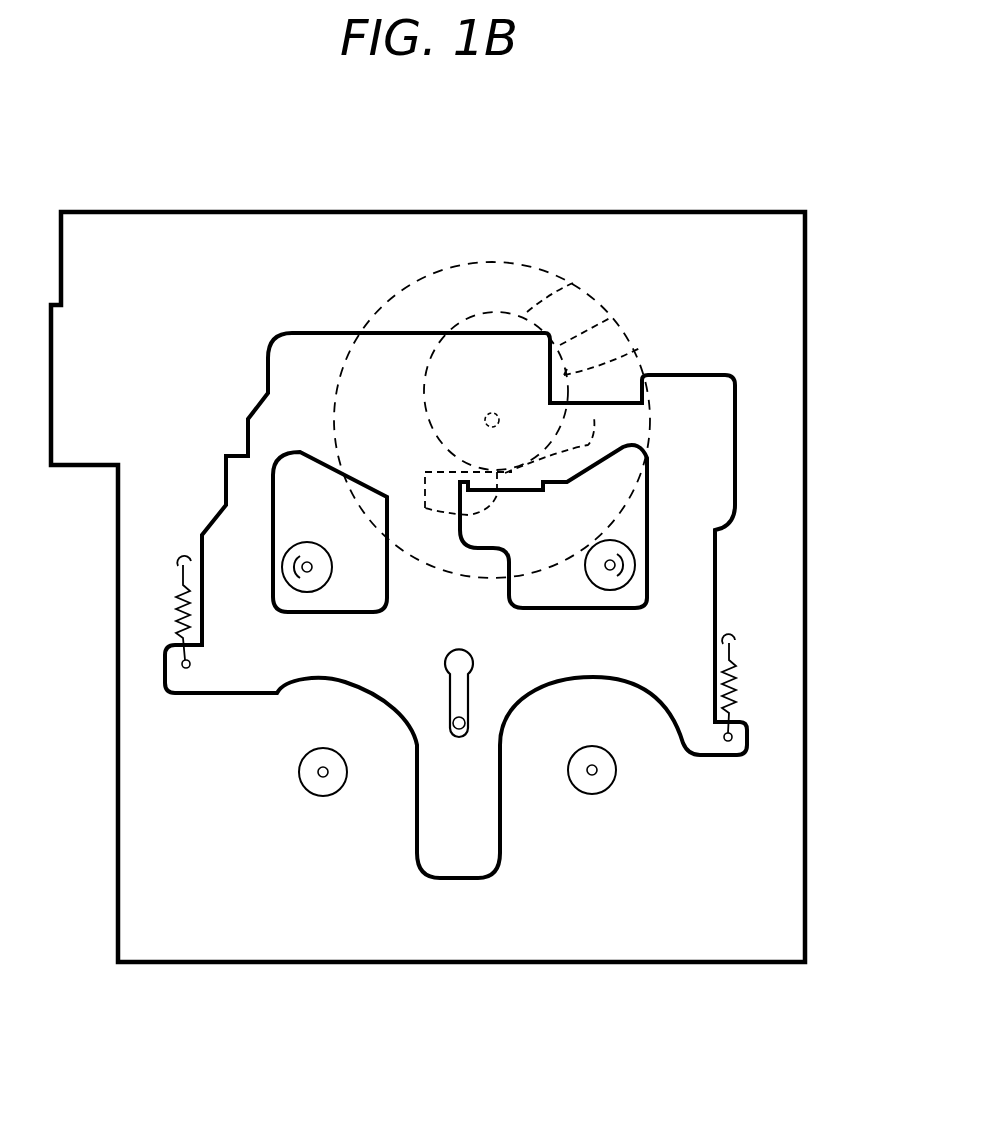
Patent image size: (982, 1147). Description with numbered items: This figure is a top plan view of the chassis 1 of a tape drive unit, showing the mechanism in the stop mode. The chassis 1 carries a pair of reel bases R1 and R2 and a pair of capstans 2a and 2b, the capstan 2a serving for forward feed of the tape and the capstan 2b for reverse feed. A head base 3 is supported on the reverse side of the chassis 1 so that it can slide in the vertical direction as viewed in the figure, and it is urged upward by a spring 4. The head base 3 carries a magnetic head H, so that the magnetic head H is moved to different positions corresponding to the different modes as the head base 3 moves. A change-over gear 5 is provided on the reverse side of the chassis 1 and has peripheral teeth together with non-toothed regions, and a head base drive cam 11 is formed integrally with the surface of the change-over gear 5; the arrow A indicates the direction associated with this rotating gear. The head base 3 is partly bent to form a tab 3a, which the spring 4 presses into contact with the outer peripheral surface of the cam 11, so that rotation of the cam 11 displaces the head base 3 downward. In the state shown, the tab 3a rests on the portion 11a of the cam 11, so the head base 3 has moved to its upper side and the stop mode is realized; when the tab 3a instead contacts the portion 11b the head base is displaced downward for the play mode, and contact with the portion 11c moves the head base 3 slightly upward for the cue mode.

The chassis 1 is at (808, 848).
The capstan 2a is at (312, 566).
The capstan 2b is at (606, 567).
The head base 3 is at (702, 580).
The tab 3a is at (517, 492).
The spring 4 is at (178, 614).
The change-over gear 5 is at (504, 262).
The head base drive cam 11 is at (640, 348).
The portion of the cam 11a is at (523, 480).
The portion of the cam 11b is at (575, 283).
The portion of the cam 11c is at (612, 318).
The rotation direction A is at (418, 258).
The magnetic head H is at (420, 468).
The reel base R1 is at (300, 774).
The reel base R2 is at (612, 778).